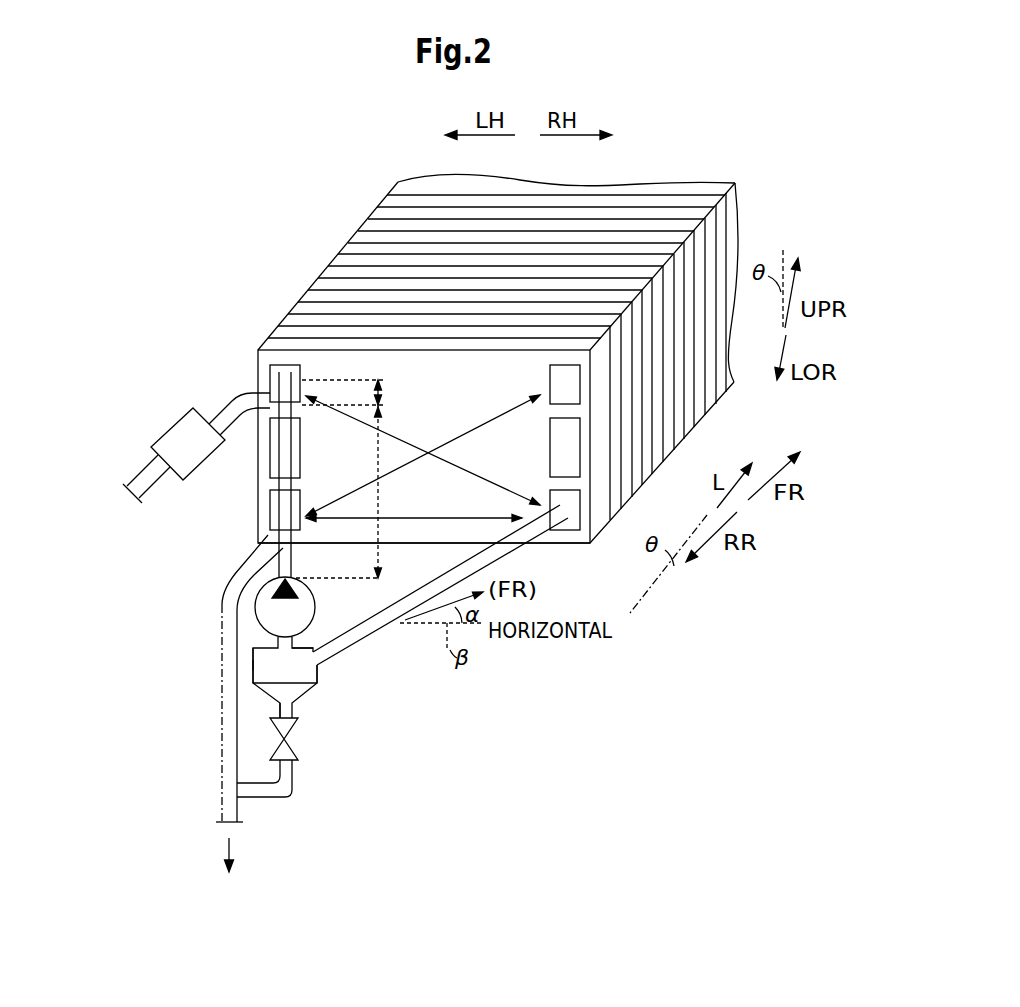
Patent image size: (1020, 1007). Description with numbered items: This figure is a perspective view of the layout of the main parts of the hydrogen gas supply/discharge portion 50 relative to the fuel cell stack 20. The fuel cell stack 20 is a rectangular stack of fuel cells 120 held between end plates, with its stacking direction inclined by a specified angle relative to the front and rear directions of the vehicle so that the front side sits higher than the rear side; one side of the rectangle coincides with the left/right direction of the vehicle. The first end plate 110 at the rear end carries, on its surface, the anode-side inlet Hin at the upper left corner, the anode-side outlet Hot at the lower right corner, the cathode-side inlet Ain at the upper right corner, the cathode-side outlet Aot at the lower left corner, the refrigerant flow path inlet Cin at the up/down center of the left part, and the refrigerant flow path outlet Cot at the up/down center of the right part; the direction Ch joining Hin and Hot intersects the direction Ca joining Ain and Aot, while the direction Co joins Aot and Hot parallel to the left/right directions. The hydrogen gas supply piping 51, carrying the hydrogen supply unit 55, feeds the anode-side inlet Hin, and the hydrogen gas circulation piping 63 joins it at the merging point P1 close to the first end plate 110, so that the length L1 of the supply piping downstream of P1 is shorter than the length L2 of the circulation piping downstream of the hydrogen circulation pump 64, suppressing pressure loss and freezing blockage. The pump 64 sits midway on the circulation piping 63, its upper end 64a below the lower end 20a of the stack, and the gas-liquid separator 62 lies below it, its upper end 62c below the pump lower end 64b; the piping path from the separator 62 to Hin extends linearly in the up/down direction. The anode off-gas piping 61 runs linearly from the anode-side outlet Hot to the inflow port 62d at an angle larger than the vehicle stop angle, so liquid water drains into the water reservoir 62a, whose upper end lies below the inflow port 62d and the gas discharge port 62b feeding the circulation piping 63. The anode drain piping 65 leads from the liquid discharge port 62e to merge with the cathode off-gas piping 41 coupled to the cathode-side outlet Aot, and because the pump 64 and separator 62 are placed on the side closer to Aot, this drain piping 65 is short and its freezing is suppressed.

The fuel cell stack 20 is at (312, 226).
The lower end of the fuel cell stack 20a is at (392, 545).
The first end plate 110 is at (272, 332).
The fuel cells 120 is at (290, 316).
The cathode off-gas piping 41 is at (221, 773).
The hydrogen gas supply/discharge portion 50 is at (437, 675).
The hydrogen gas supply piping 51 is at (150, 462).
The hydrogen supply unit 55 is at (172, 422).
The anode off-gas piping 61 is at (368, 640).
The gas-liquid separator 62 is at (307, 700).
The water reservoir 62a is at (266, 695).
The gas discharge port 62b is at (253, 658).
The upper end of the gas-liquid separator 62c is at (316, 649).
The inflow port 62d is at (322, 668).
The liquid discharge port 62e is at (282, 708).
The hydrogen gas circulation piping 63 is at (278, 488).
The hydrogen circulation pump 64 is at (316, 603).
The upper end of the hydrogen circulation pump 64a is at (234, 556).
The lower end of the hydrogen circulation pump 64b is at (236, 643).
The anode drain piping 65 is at (297, 778).
The merging point P1 is at (258, 412).
The anode-side inlet Hin is at (268, 378).
The refrigerant flow path inlet Cin is at (301, 448).
The cathode-side outlet Aot is at (269, 504).
The cathode-side inlet Ain is at (549, 385).
The refrigerant flow path outlet Cot is at (549, 447).
The anode-side outlet Hot is at (549, 503).
The direction of virtual line interconnecting cathode-side inlet and outlet Ca is at (423, 455).
The direction of virtual line interconnecting anode-side inlet and outlet Ch is at (423, 450).
The direction of virtual line interconnecting cathode-side outlet and anode-side out Co is at (414, 507).
The length of supply piping downstream of merging point L1 is at (359, 393).
The length of circulation piping downstream of pump L2 is at (343, 491).